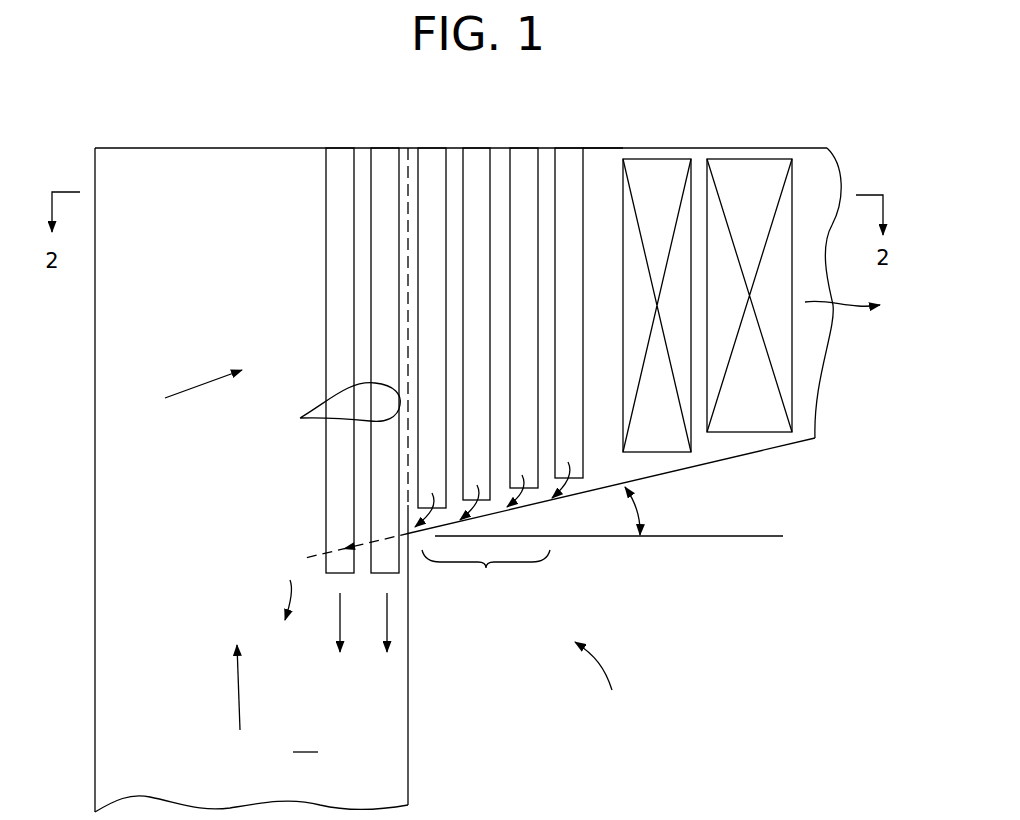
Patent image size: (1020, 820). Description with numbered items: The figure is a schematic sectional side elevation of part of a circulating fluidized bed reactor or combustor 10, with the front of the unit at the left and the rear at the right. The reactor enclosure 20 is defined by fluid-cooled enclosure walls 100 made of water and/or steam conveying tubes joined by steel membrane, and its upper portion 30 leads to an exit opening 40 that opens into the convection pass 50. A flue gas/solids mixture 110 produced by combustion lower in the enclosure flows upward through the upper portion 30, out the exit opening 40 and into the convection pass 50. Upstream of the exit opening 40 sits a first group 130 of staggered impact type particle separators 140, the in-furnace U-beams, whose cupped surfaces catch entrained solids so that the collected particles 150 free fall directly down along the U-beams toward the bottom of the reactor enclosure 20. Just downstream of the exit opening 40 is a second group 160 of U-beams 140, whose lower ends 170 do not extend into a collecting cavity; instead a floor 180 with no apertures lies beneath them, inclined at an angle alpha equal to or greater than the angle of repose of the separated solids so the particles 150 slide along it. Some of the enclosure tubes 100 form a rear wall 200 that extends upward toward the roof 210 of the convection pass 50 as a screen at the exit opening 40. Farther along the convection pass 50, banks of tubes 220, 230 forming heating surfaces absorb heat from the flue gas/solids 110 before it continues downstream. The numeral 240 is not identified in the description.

The circulating fluidized bed reactor 10 is at (600, 682).
The reactor enclosure 20 is at (305, 738).
The upper portion 30 is at (115, 298).
The exit opening 40 is at (408, 195).
The convection pass 50 is at (810, 165).
The enclosure walls 100 is at (198, 148).
The flue gas/solids mixture 110 is at (200, 385).
The first group of impact type particle separators 130 is at (300, 418).
The impact type particle separators 140 is at (380, 236).
The collected particles 150 is at (430, 495).
The second group of impact type particle separators 160 is at (486, 575).
The lower ends 170 is at (490, 517).
The floor 180 is at (600, 492).
The rear wall 200 is at (408, 697).
The roof 210 is at (605, 150).
The bank of tubes 220 is at (664, 165).
The bank of tubes 230 is at (755, 175).
The outlet opening 240 is at (323, 554).